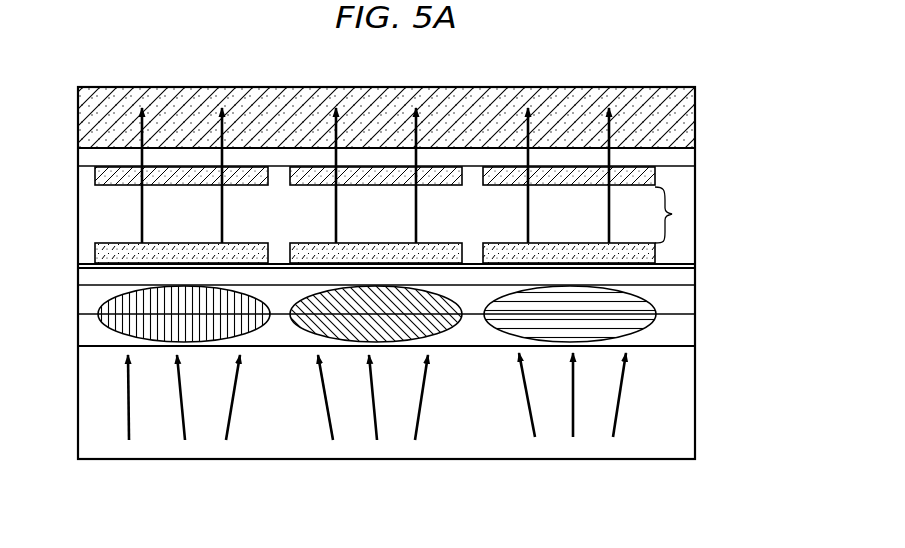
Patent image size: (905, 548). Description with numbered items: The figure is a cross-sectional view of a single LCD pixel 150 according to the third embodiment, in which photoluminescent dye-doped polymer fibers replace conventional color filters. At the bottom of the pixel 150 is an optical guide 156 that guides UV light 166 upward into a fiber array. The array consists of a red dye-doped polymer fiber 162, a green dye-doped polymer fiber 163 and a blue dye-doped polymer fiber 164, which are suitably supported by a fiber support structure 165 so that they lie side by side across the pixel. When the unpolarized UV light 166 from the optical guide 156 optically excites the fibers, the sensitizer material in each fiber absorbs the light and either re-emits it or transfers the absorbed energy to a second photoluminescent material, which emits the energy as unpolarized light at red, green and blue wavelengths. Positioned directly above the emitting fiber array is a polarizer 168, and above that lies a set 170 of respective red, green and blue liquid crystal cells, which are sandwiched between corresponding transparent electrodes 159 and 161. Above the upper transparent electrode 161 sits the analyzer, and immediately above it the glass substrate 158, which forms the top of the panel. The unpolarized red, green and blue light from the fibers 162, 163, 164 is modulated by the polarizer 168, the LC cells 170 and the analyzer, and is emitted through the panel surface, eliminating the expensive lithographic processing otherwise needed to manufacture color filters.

The pixel 150 is at (101, 73).
The optical guide 156 is at (88, 438).
The glass substrate 158 is at (675, 98).
The transparent electrode 159 is at (655, 253).
The transparent electrode 161 is at (655, 171).
The red dye-doped polymer fiber 162 is at (115, 322).
The green dye-doped polymer fiber 163 is at (310, 318).
The blue dye-doped polymer fiber 164 is at (647, 293).
The fiber support structure 165 is at (682, 329).
The UV light 166 is at (618, 418).
The polarizer 168 is at (683, 268).
The set of LC cells 170 is at (672, 214).